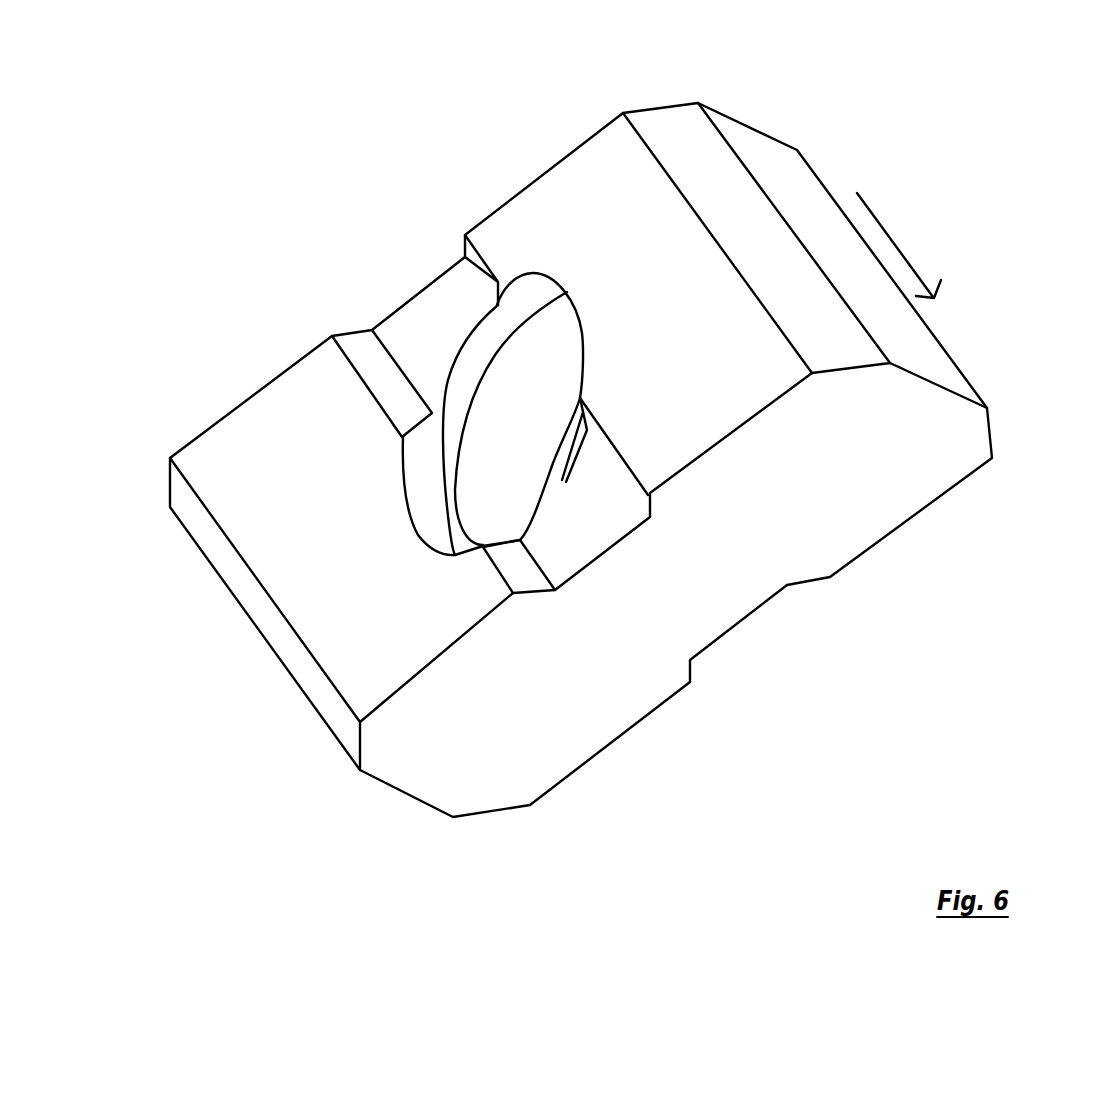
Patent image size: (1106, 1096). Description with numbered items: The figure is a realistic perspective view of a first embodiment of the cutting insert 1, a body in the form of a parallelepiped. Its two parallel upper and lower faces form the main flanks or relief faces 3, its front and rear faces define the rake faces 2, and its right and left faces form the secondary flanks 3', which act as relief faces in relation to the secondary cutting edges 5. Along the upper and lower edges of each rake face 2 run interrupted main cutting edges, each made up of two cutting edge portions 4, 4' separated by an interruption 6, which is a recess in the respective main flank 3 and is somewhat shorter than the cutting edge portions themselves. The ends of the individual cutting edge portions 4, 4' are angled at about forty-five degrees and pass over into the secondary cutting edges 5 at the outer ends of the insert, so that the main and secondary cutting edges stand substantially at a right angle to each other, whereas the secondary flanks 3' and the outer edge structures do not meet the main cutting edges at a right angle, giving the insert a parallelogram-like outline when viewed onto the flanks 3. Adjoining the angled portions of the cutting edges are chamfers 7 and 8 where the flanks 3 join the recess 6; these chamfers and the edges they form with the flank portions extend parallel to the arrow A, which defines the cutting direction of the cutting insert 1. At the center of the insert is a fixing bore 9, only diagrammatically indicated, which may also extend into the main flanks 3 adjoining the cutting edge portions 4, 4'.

The cutting insert 1 is at (948, 743).
The rake face 2 is at (494, 737).
The main flank 3 is at (436, 526).
The secondary flank 3' is at (842, 255).
The main cutting edge portion 4 is at (678, 455).
The main cutting edge portion 4' is at (612, 584).
The secondary cutting edge 5 is at (413, 810).
The interruption (recess) 6 is at (613, 532).
The chamfer 7 is at (653, 127).
The chamfer 8 is at (638, 492).
The fixing bore 9 is at (517, 420).
The arrow defining the cutting direction A is at (899, 245).